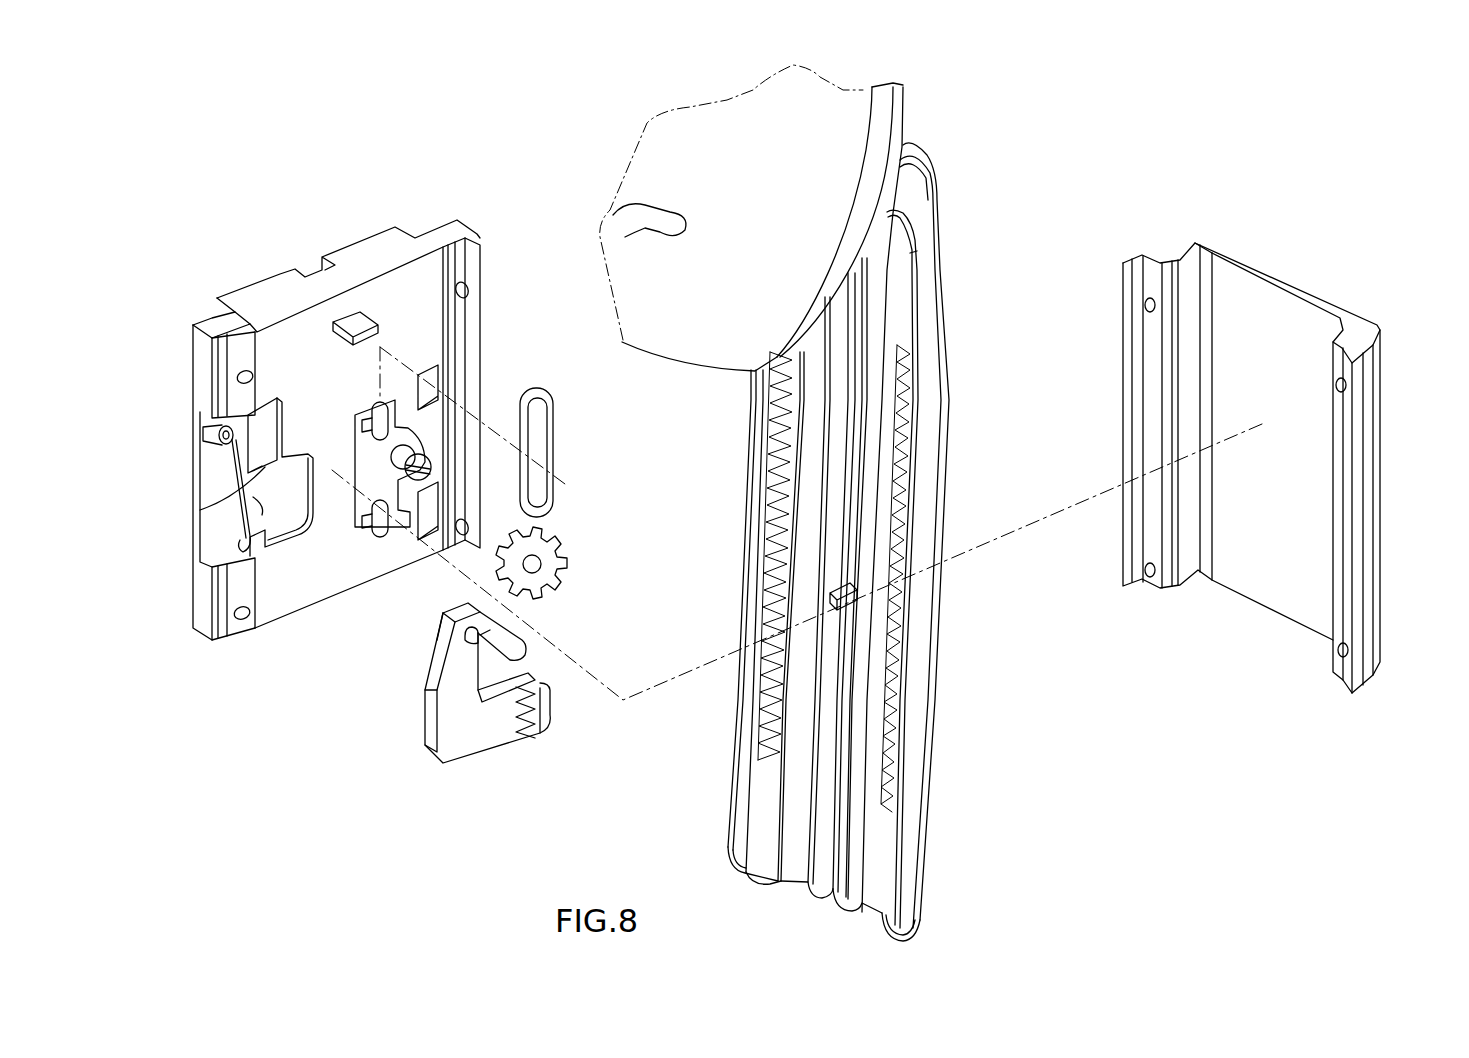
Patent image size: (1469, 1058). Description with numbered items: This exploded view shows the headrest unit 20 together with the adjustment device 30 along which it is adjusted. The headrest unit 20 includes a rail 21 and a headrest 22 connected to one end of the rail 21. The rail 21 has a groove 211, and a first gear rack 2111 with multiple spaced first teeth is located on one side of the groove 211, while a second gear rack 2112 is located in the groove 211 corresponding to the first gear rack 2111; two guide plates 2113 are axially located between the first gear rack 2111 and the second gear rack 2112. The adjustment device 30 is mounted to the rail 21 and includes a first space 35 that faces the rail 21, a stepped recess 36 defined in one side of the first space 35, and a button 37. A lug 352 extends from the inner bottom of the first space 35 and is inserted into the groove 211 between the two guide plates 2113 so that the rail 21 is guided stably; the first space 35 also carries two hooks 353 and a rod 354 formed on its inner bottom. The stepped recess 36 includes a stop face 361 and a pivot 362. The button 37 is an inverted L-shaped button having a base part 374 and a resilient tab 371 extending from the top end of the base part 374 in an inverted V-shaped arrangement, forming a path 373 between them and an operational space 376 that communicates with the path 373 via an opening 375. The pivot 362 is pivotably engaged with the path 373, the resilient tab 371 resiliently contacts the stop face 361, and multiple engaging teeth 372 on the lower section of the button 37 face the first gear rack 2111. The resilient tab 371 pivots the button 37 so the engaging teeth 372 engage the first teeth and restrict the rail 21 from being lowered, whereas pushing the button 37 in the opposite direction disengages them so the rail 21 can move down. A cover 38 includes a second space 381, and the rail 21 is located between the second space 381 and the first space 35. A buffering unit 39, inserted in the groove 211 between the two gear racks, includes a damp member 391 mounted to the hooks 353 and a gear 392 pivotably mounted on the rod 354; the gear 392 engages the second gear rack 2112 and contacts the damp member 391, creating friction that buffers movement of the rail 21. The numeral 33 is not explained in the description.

The headrest unit 20 is at (1040, 135).
The rail 21 is at (923, 217).
The headrest 22 is at (832, 183).
The groove 211 is at (890, 293).
The first gear rack 2111 is at (893, 347).
The second gear rack 2112 is at (763, 740).
The guide plates 2113 is at (826, 445).
The adjustment device 30 is at (222, 290).
The frame plate 33 is at (305, 277).
The first space 35 is at (414, 287).
The lug 352 is at (350, 332).
The hooks 353 is at (385, 412).
The rod 354 is at (412, 455).
The stepped recess 36 is at (262, 500).
The stop face 361 is at (248, 483).
The pivot 362 is at (205, 436).
The button 37 is at (487, 743).
The resilient tab 371 is at (525, 645).
The engaging teeth 372 is at (530, 685).
The path 373 is at (430, 675).
The base part 374 is at (437, 660).
The opening 375 is at (493, 623).
The operational space 376 is at (473, 690).
The cover 38 is at (1360, 433).
The second space 381 is at (1275, 312).
The buffering unit 39 is at (675, 398).
The damp member 391 is at (550, 460).
The gear 392 is at (563, 545).